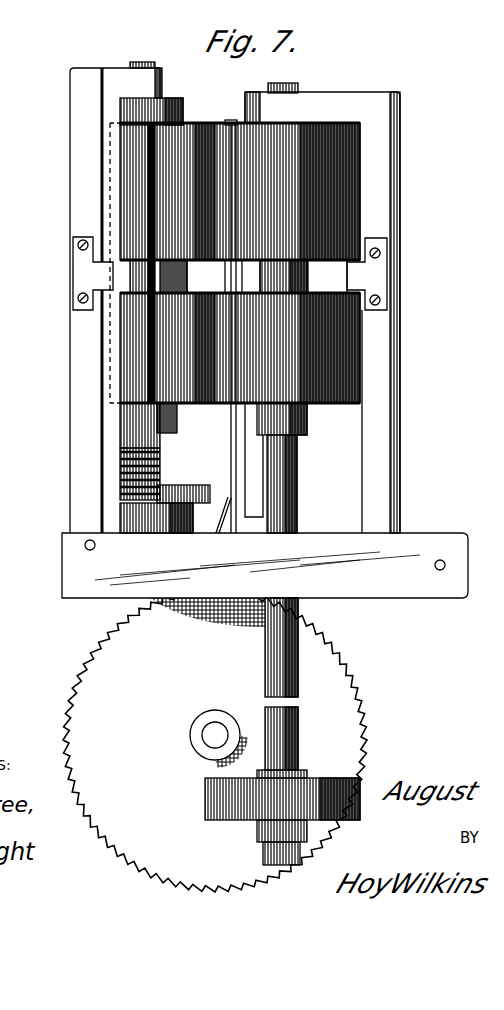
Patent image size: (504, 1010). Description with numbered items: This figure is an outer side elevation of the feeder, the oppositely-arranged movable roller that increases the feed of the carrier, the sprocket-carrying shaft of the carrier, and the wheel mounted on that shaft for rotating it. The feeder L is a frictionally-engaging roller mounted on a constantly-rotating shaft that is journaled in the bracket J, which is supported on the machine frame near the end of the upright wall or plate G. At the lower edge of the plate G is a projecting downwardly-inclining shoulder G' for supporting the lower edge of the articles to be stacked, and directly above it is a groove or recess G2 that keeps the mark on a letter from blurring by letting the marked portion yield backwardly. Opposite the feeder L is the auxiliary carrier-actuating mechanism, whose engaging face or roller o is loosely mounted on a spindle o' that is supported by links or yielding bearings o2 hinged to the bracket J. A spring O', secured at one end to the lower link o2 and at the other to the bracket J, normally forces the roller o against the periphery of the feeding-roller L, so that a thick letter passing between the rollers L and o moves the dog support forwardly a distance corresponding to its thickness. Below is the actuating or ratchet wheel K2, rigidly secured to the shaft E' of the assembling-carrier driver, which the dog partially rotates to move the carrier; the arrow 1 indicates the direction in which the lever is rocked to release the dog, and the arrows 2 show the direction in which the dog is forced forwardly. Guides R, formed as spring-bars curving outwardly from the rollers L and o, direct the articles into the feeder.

The arrow 1 is at (296, 83).
The feeder L is at (357, 200).
The guides R is at (230, 273).
The bracket J is at (425, 547).
The engaging face or roller o is at (173, 282).
The spindle o' is at (152, 99).
The links or yielding bearings o2 is at (183, 97).
The spring O' is at (118, 474).
The upright wall or plate G is at (218, 312).
The groove or recess G2 is at (231, 472).
The shoulder G' is at (224, 531).
The actuating or ratchet wheel K2 is at (345, 714).
The arrows 2 is at (322, 791).
The shaft E' is at (219, 725).